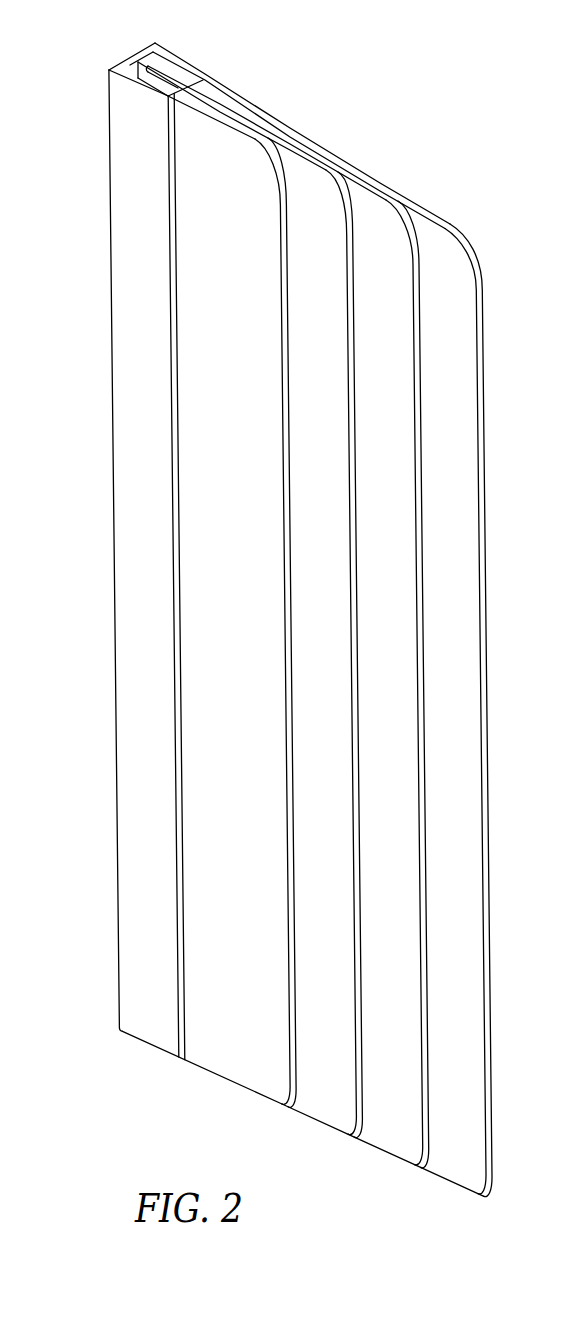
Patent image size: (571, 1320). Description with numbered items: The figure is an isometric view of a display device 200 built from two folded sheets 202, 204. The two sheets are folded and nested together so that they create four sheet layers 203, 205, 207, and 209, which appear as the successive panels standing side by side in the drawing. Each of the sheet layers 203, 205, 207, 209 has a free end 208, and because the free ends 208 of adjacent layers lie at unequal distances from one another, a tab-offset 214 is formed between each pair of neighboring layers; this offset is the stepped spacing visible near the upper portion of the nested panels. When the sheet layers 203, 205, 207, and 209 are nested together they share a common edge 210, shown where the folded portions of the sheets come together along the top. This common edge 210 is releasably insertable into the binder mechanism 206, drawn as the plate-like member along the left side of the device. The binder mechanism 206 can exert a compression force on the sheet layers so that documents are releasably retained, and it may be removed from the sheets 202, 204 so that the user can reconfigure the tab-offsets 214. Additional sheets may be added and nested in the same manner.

The display device 200 is at (465, 121).
The folded sheet 202 is at (324, 466).
The sheet layer 203 is at (224, 1078).
The folded sheet 204 is at (228, 572).
The sheet layer 205 is at (304, 1115).
The binder mechanism 206 is at (120, 992).
The sheet layer 207 is at (368, 1145).
The free end 208 is at (284, 288).
The sheet layer 209 is at (431, 1174).
The common edge 210 is at (258, 68).
The tab-offset 214 is at (480, 260).